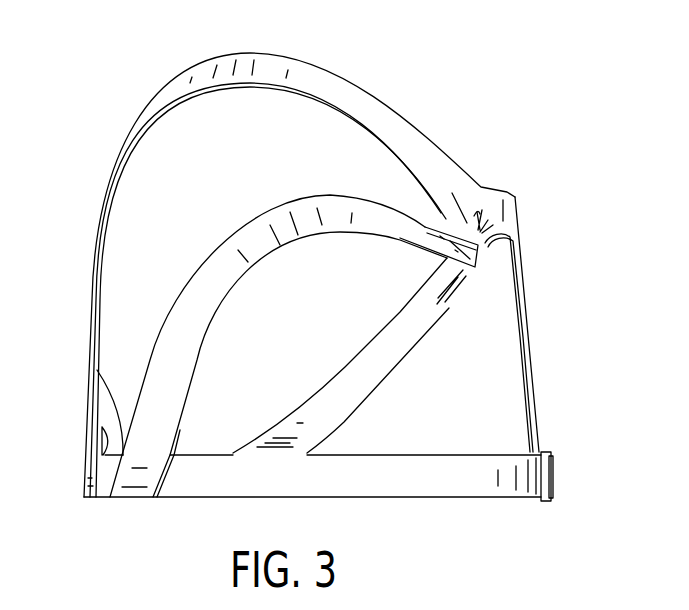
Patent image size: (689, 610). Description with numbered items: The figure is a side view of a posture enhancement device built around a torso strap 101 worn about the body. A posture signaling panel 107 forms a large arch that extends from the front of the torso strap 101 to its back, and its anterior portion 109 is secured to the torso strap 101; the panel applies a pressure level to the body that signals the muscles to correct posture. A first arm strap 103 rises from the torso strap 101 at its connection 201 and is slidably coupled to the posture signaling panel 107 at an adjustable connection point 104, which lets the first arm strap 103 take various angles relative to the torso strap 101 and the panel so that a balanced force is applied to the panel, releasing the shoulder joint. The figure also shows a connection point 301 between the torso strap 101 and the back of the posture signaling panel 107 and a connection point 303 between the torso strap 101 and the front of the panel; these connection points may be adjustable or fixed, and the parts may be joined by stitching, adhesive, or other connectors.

The torso strap 101 is at (210, 487).
The first arm strap 103 is at (280, 213).
The connection point 104 is at (479, 269).
The posture signaling panel 107 is at (113, 157).
The anterior portion 109 is at (526, 273).
The connection 201 is at (103, 387).
The connection point 301 is at (102, 427).
The connection point 303 is at (265, 453).